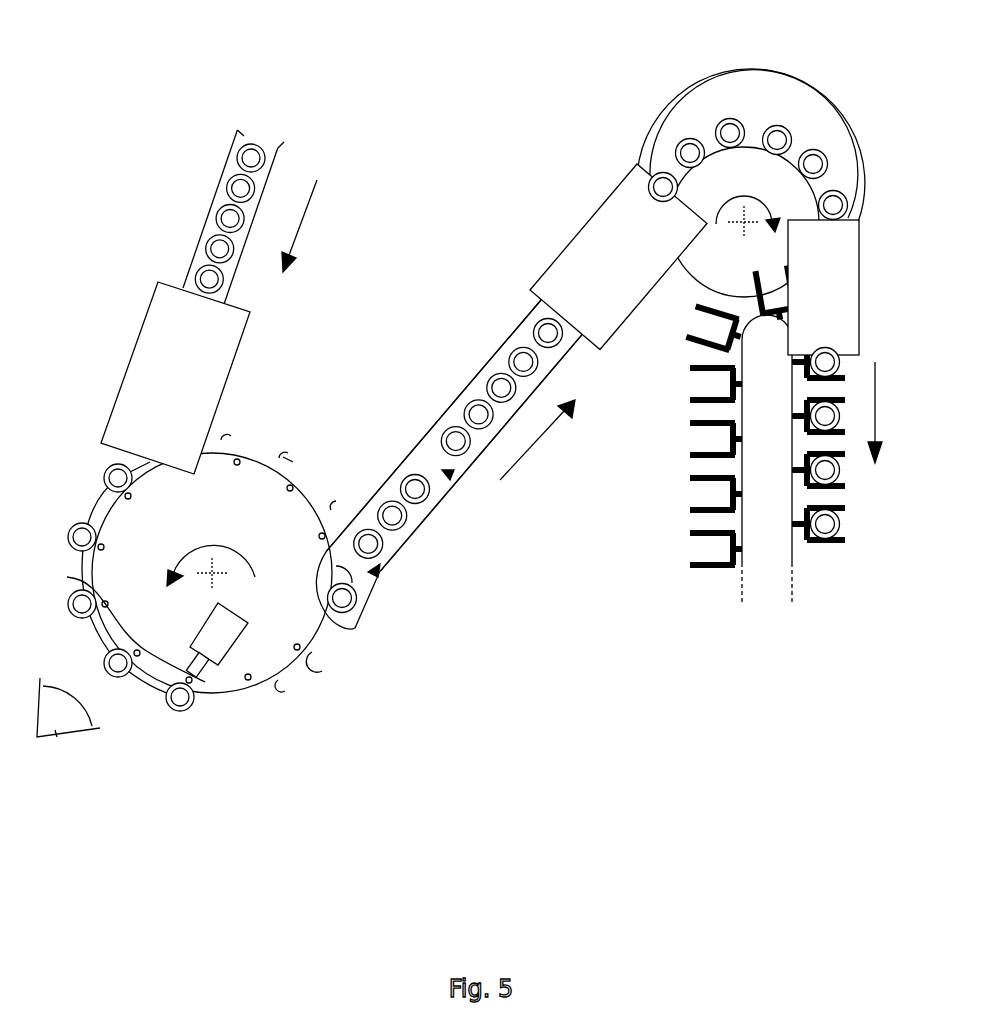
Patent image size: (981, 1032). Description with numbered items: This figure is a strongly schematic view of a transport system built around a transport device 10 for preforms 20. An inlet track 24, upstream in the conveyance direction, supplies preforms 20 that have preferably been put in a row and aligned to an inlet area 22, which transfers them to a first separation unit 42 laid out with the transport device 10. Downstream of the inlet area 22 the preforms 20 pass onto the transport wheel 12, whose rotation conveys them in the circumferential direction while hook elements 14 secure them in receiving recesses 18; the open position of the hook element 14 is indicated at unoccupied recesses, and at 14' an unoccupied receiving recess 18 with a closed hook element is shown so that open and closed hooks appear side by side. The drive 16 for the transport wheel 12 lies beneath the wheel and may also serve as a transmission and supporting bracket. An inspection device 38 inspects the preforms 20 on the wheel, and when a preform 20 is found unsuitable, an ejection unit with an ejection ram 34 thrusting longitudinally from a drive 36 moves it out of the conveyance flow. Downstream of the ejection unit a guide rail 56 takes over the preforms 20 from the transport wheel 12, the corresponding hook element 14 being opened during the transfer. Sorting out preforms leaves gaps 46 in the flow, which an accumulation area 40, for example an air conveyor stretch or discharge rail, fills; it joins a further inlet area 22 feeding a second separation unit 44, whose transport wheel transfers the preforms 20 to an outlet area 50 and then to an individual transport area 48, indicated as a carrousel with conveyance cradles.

The transport device 10 is at (390, 670).
The transport wheel 12 is at (232, 446).
The hook element 14 is at (289, 764).
The closed hook element at unoccupied receiving recess 14' is at (359, 704).
The transport wheel drive 16 is at (760, 108).
The receiving recess 18 is at (300, 484).
The preform 20 is at (262, 160).
The inlet area 22 is at (152, 340).
The inlet track 24 is at (215, 196).
The ejection ram 34 is at (67, 577).
The drive 36 is at (245, 688).
The inspection device 38 is at (60, 737).
The accumulation area 40 is at (458, 332).
The first separation unit 42 is at (305, 412).
The second separation unit 44 is at (700, 85).
The gap 46 is at (450, 474).
The individual transport area 48 is at (755, 655).
The outlet area 50 is at (850, 252).
The guide rail 56 is at (415, 532).